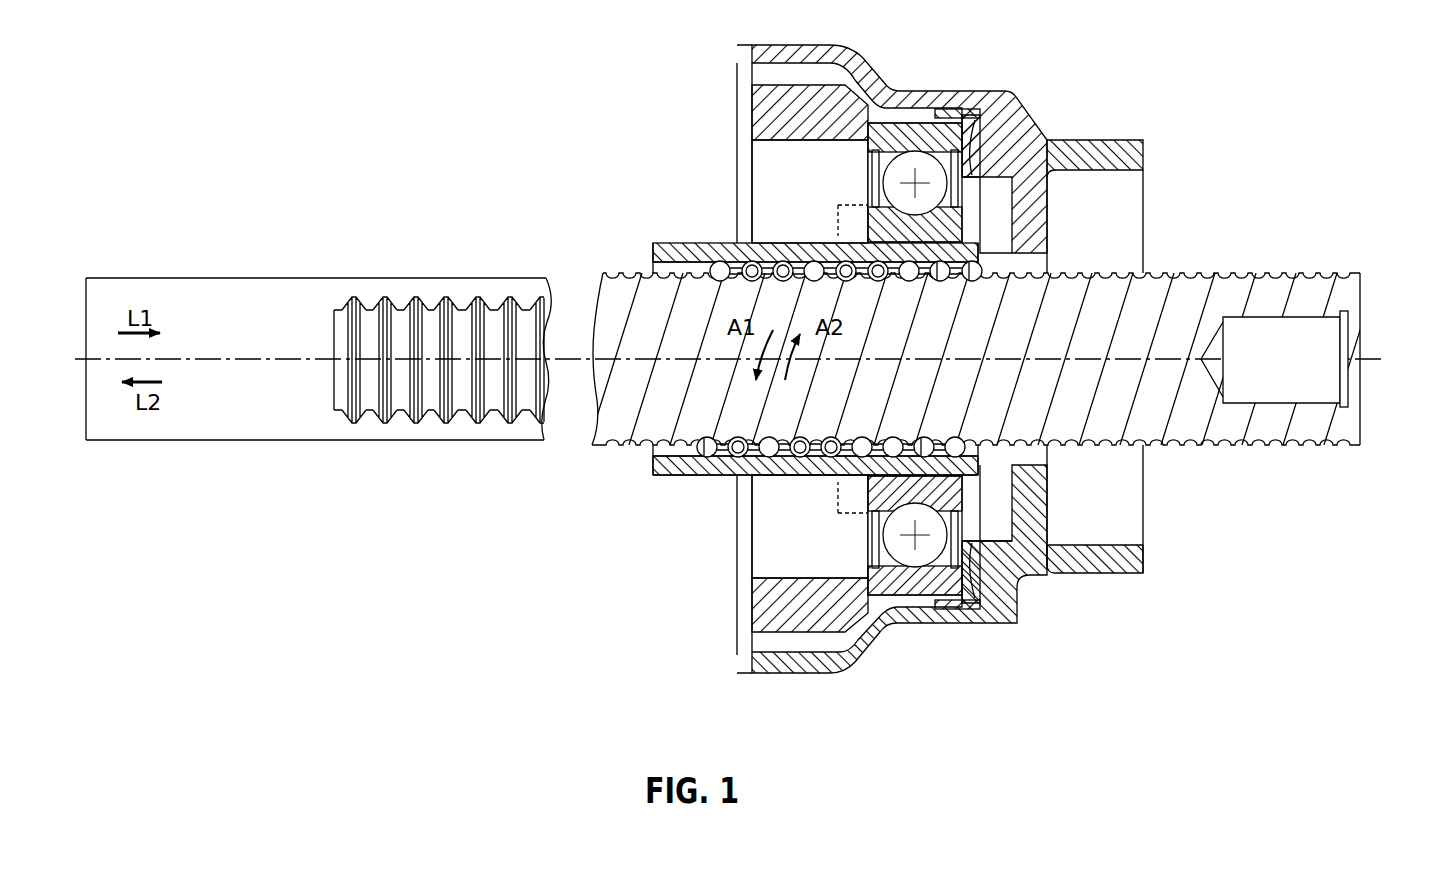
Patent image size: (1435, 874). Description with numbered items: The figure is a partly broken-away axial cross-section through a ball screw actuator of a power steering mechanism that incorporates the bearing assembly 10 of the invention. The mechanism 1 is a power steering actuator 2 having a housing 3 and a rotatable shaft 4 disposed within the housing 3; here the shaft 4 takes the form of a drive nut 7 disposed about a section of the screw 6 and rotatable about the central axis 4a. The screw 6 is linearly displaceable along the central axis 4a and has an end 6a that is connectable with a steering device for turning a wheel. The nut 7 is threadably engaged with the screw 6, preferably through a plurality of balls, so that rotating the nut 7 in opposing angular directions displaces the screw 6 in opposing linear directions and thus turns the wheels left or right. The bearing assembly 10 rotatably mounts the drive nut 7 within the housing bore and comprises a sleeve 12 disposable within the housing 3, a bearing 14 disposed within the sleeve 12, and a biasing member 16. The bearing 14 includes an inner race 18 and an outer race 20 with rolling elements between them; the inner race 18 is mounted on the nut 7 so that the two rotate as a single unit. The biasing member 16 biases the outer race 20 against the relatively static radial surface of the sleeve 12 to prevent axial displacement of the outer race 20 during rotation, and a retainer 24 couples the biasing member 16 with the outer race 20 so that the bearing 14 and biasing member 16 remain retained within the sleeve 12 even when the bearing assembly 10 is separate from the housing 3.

The mechanism 1 is at (1268, 156).
The power steering actuator 2 is at (1215, 226).
The housing 3 is at (913, 47).
The rotatable shaft 4 is at (667, 211).
The central axis 4a is at (223, 362).
The screw 6 is at (1301, 270).
The end of the screw 6a is at (1350, 293).
The drive nut 7 is at (702, 241).
The bearing assembly 10 is at (648, 118).
The sleeve 12 is at (746, 103).
The bearing 14 is at (836, 177).
The biasing member 16 is at (968, 152).
The inner race 18 is at (872, 227).
The outer race 20 is at (906, 135).
The retainer 24 is at (976, 120).